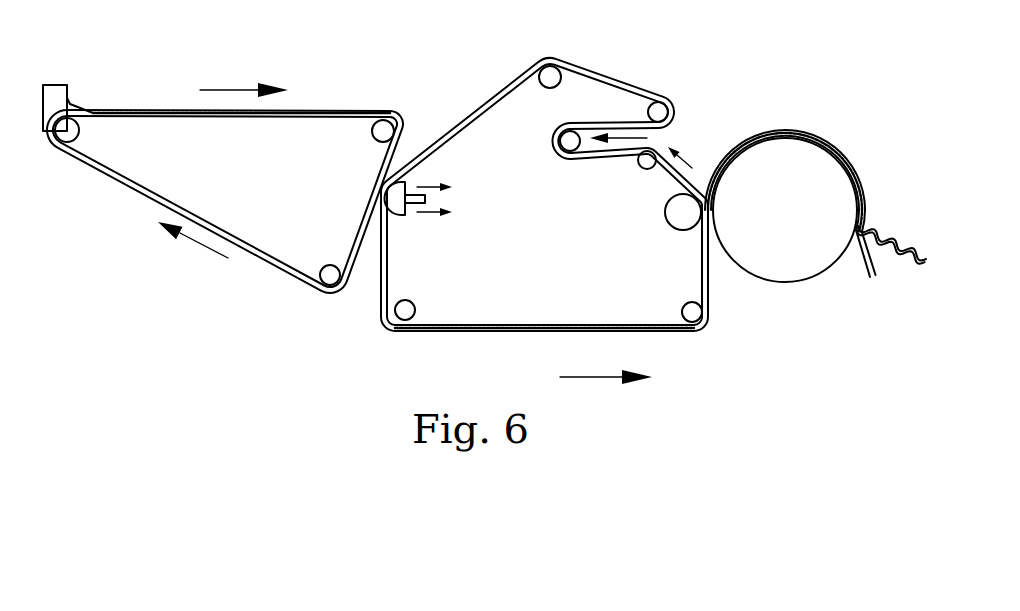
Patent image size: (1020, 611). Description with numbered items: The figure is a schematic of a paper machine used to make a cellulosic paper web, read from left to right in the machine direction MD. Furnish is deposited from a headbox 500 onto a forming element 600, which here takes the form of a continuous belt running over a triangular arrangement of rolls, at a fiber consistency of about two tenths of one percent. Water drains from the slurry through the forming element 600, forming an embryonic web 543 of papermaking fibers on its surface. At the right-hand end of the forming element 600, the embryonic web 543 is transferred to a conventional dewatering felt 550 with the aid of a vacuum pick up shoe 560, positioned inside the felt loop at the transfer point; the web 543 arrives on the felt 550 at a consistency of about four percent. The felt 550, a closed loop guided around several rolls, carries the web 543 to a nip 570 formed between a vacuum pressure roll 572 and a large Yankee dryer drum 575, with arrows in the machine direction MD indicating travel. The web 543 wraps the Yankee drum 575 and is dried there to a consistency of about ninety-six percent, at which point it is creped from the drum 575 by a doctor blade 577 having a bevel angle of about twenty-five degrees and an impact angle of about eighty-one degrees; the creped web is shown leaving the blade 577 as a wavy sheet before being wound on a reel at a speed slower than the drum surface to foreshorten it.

The headbox 500 is at (63, 92).
The embryonic web 543 is at (322, 110).
The dewatering felt 550 is at (438, 138).
The vacuum pick up shoe 560 is at (403, 216).
The nip 570 is at (703, 175).
The vacuum pressure roll 572 is at (677, 220).
The Yankee dryer drum 575 is at (802, 270).
The doctor blade 577 is at (872, 280).
The forming element 600 is at (258, 118).
The machine direction MD is at (227, 90).